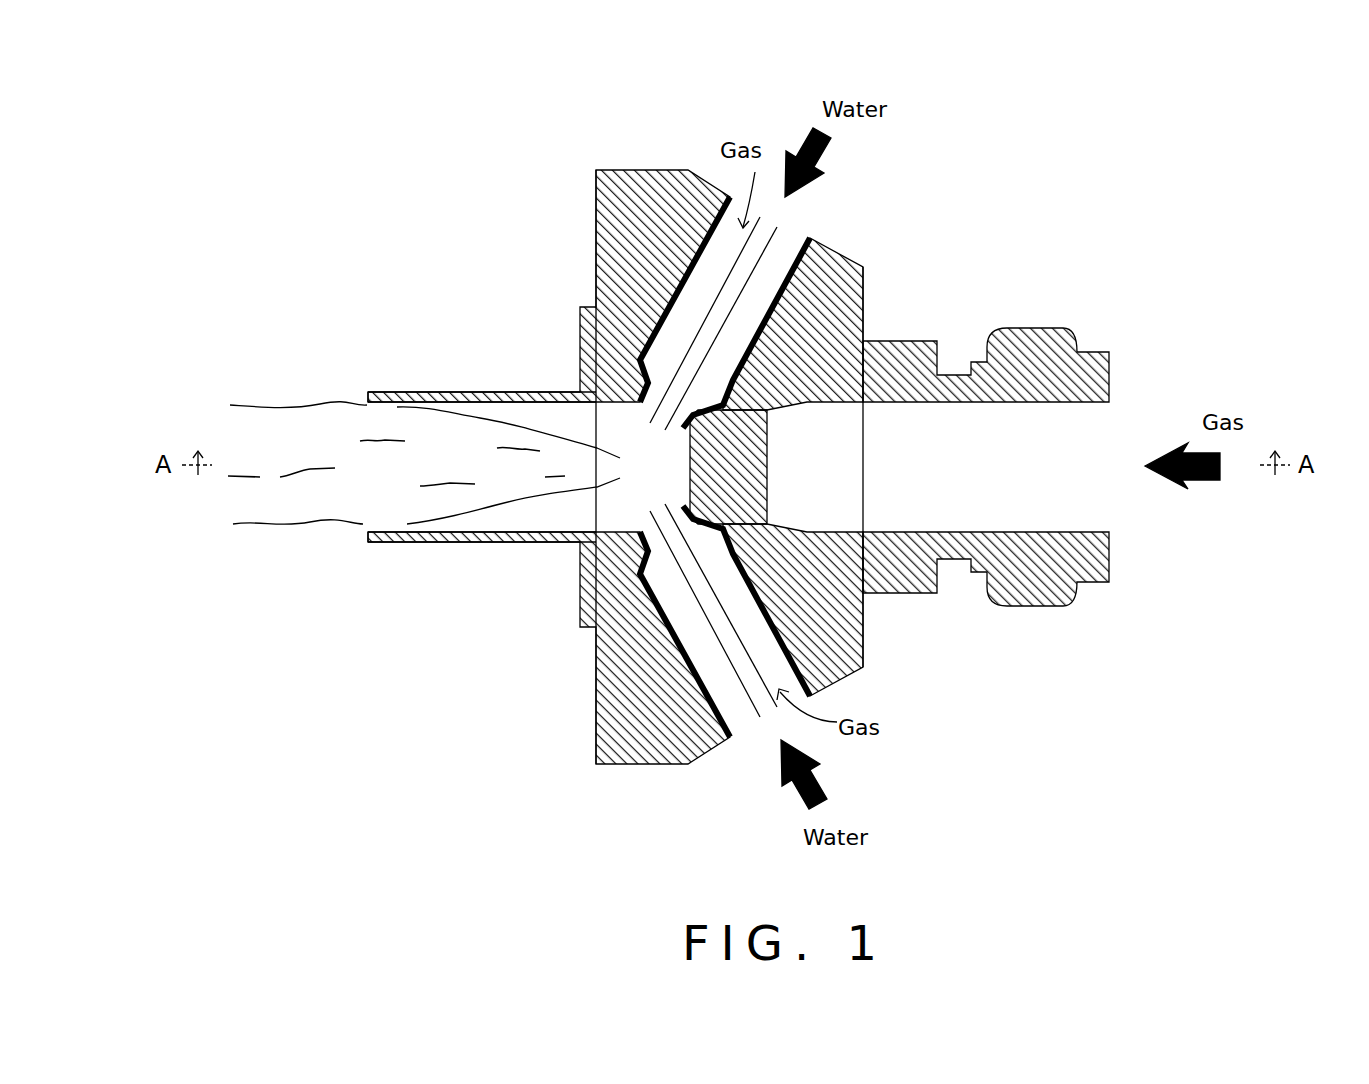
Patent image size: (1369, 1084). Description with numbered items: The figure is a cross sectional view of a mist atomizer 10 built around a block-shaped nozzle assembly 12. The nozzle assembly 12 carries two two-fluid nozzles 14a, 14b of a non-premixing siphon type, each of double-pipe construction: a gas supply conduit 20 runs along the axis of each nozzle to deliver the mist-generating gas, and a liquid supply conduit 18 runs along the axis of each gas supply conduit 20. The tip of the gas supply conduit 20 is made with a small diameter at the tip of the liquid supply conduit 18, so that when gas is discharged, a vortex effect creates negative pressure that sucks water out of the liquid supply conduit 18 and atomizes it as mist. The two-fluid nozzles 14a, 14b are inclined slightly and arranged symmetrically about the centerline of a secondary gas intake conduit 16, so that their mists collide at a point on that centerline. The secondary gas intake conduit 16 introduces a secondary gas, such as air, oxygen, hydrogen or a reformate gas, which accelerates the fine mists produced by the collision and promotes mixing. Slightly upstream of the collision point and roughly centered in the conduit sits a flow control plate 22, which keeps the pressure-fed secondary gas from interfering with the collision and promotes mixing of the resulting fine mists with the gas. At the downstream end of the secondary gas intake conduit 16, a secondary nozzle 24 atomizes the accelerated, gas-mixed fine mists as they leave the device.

The mist atomizer 10 is at (815, 457).
The nozzle assembly 12 is at (865, 292).
The two-fluid nozzle 14a is at (670, 294).
The two-fluid nozzle 14b is at (660, 619).
The secondary gas intake conduit 16 is at (1083, 505).
The liquid supply conduit 18 is at (762, 258).
The gas supply conduit 20 is at (720, 247).
The flow control plate 22 is at (745, 442).
The secondary nozzle 24 is at (487, 392).